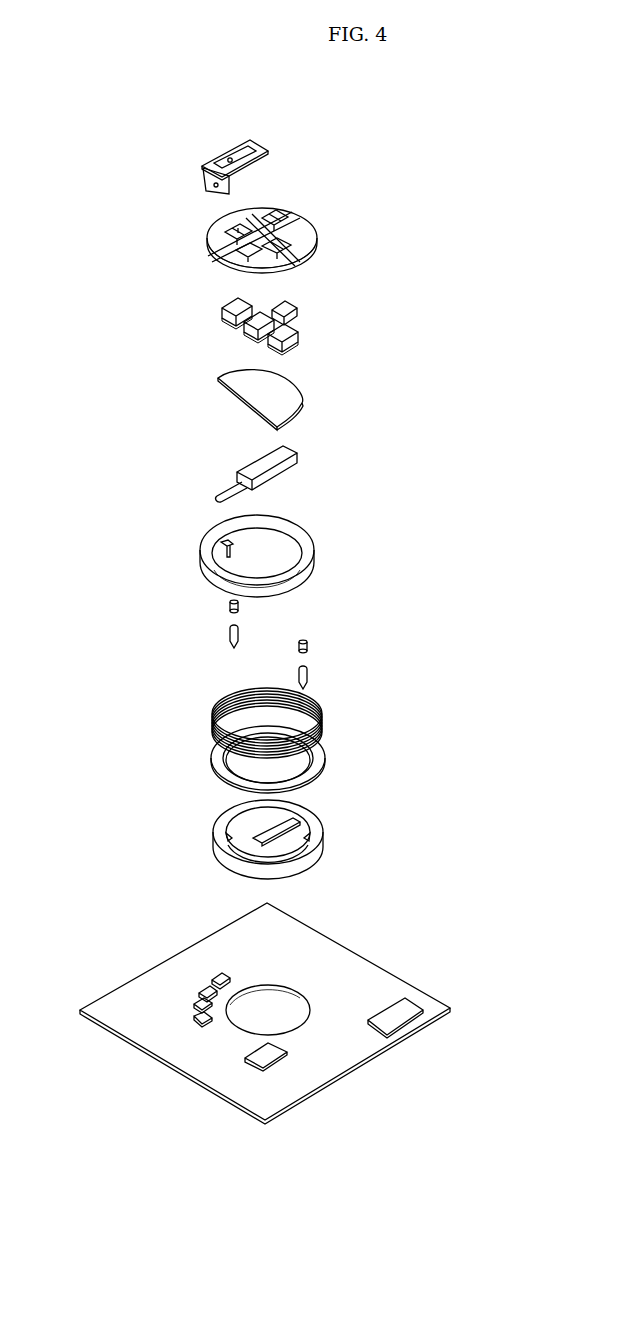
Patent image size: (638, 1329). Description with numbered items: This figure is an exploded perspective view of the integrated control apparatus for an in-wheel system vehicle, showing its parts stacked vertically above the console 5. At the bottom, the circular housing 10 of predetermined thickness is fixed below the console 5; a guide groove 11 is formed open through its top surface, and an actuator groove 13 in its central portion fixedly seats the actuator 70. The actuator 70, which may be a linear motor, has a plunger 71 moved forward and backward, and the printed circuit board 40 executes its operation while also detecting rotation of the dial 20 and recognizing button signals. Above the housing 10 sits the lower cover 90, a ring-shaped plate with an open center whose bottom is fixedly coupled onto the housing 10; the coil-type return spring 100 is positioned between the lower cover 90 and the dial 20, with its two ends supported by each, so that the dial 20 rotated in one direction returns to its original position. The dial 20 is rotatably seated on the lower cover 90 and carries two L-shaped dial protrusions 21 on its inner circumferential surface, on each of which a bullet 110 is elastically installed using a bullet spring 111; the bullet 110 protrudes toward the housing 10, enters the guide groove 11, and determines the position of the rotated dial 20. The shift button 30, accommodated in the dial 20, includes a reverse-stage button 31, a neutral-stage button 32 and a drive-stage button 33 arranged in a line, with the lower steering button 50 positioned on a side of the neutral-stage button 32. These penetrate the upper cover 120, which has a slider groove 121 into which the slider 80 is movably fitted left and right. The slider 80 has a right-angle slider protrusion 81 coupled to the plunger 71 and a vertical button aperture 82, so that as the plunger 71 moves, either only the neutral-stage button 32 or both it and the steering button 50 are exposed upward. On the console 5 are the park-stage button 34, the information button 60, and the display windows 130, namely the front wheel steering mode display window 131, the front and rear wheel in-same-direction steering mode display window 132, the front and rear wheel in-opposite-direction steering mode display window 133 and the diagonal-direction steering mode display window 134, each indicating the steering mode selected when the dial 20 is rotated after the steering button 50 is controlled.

The console 5 is at (380, 980).
The housing 10 is at (270, 833).
The guide groove 11 is at (318, 838).
The actuator groove 13 is at (290, 826).
The dial 20 is at (313, 548).
The dial protrusion 21 is at (222, 546).
The shift button 30 is at (253, 324).
The reverse (R)-stage button 31 is at (224, 306).
The neutral (N)-stage button 32 is at (246, 332).
The drive (D)-stage button 33 is at (292, 332).
The park (P)-stage button 34 is at (258, 1056).
The printed circuit board (PCB) 40 is at (284, 400).
The steering button 50 is at (290, 304).
The information button 60 is at (400, 1015).
The actuator 70 is at (290, 460).
The plunger 71 is at (224, 496).
The slider 80 is at (258, 146).
The slider protrusion 81 is at (212, 185).
The button aperture 82 is at (222, 158).
The lower cover 90 is at (321, 758).
The return spring 100 is at (212, 722).
The bullet 110 is at (229, 636).
The bullet spring 111 is at (229, 606).
The upper cover 120 is at (306, 238).
The slider groove 121 is at (292, 222).
The display windows 130 is at (128, 1015).
The front wheel steering mode display window 131 is at (213, 980).
The front and rear wheel in-same-direction steering mode display window 132 is at (200, 993).
The front and rear wheel in-opposite-direction steering mode display window 133 is at (195, 1005).
The diagonal-direction steering mode display window 134 is at (195, 1018).